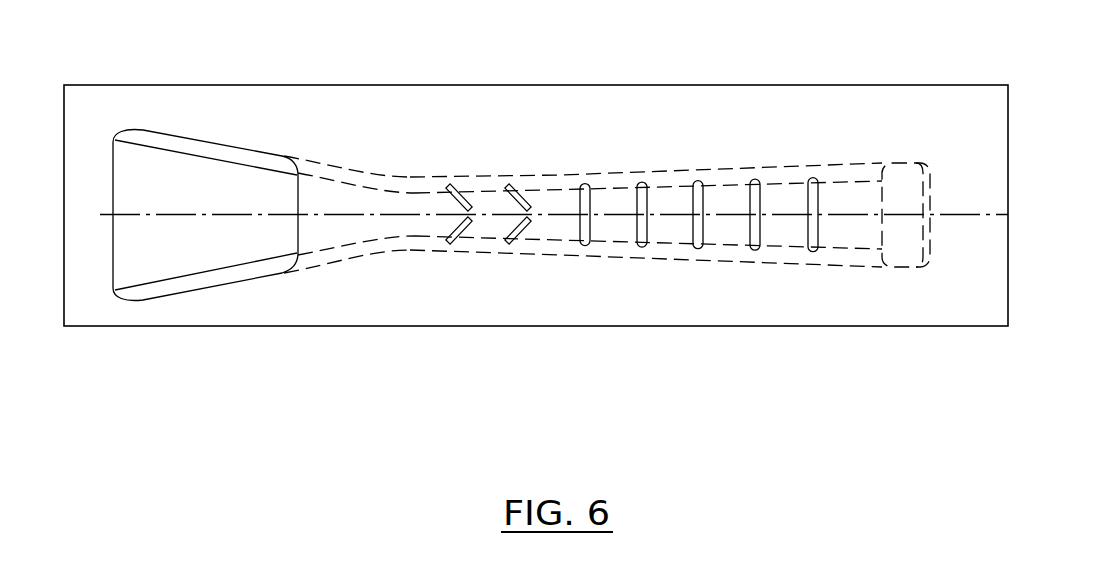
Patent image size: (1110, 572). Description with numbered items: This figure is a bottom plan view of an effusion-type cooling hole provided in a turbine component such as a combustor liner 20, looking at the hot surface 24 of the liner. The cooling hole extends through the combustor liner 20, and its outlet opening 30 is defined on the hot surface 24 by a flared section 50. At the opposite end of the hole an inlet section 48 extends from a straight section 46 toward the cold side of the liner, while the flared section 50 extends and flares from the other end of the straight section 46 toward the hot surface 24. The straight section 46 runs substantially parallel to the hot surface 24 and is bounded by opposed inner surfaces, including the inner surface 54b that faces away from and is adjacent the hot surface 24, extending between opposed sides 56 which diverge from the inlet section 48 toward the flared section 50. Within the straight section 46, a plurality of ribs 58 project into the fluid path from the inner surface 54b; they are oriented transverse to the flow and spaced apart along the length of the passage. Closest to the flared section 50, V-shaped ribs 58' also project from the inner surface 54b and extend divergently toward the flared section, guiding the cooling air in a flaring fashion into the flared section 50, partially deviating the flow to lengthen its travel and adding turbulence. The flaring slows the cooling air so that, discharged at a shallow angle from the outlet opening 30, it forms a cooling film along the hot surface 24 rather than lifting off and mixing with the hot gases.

The combustor liner 20 is at (988, 127).
The hot surface 24 is at (802, 308).
The outlet opening 30 is at (228, 235).
The straight section 46 is at (447, 286).
The inlet section 48 is at (898, 268).
The flared section 50 is at (332, 253).
The inner surface 54b is at (673, 218).
The opposed sides 56 is at (564, 177).
The ribs 58 is at (718, 136).
The V-shaped ribs 58' is at (417, 302).